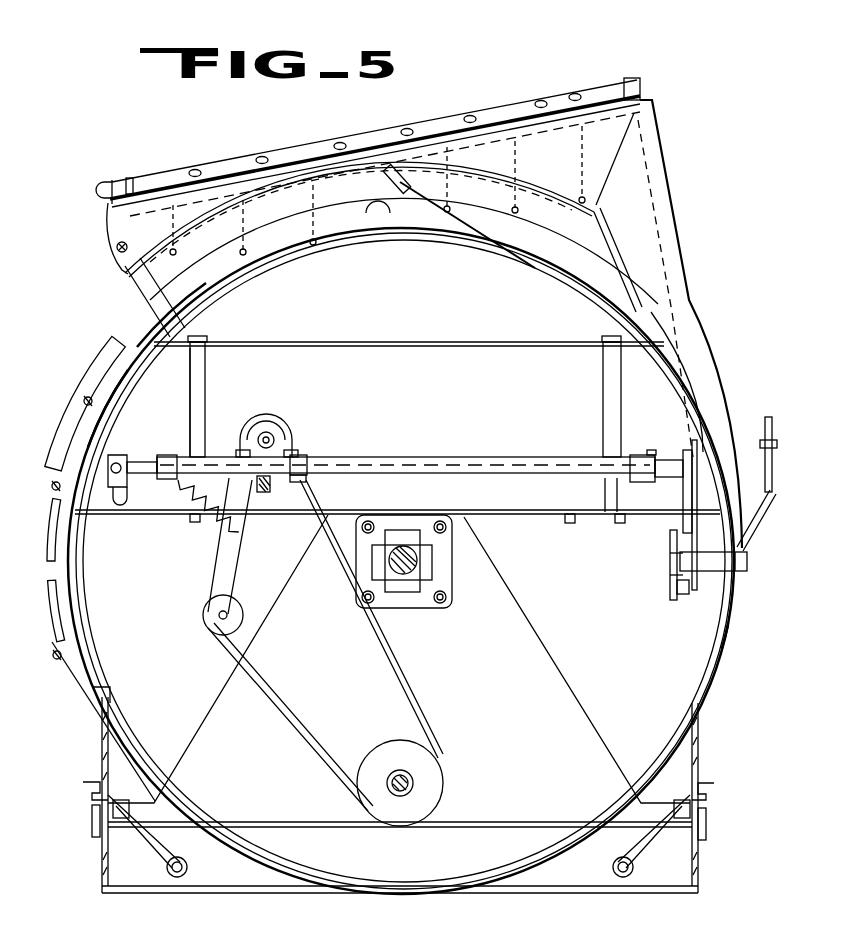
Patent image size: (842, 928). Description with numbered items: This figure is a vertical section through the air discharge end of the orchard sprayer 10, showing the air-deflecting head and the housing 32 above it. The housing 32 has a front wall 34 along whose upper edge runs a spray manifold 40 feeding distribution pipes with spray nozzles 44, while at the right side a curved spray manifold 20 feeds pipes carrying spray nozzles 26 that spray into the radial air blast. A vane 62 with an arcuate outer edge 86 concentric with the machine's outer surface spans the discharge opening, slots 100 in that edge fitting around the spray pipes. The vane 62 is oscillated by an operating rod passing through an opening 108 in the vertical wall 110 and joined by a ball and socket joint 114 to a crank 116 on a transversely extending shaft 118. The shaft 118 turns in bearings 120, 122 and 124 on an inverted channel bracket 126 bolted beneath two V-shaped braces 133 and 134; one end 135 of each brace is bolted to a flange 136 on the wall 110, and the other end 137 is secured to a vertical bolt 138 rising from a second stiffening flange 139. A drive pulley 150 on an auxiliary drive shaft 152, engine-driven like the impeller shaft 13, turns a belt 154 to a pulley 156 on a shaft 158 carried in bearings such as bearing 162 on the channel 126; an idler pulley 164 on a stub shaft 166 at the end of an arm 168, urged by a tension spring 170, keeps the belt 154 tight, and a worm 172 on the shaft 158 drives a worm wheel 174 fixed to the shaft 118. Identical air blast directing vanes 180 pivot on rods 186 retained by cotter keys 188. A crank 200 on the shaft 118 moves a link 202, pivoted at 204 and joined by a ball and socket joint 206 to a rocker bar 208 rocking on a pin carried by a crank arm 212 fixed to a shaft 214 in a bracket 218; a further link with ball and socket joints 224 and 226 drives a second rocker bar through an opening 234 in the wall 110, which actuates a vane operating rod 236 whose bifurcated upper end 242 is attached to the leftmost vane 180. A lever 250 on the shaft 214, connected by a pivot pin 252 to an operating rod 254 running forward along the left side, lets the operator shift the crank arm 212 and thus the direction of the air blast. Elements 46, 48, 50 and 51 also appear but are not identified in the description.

The sprayer 10 is at (706, 70).
The shaft 13 is at (400, 563).
The curved spray manifold 20 is at (160, 320).
The spray nozzles 26 is at (87, 398).
The housing 32 is at (677, 145).
The front wall 34 is at (675, 245).
The spray manifold 40 is at (325, 140).
The spray nozzles 44 is at (195, 170).
The brace 46 is at (506, 250).
The drum rim section 48 is at (735, 640).
The end panel 50 is at (108, 233).
The curved side panel 51 is at (140, 283).
The vane 62 is at (102, 367).
The arcuate outer edge 86 is at (65, 440).
The slots 100 is at (68, 412).
The opening 108 is at (120, 500).
The vertical wall 110 is at (495, 373).
The ball and socket joint 114 is at (117, 462).
The crank 116 is at (128, 456).
The shaft 118 is at (142, 466).
The bearing 120 is at (167, 480).
The bearing 122 is at (305, 480).
The bearing 124 is at (645, 482).
The inverted channel bracket 126 is at (425, 457).
The V-shaped brace 133 is at (205, 370).
The V-shaped brace 134 is at (603, 363).
The brace end 135 is at (205, 341).
The rigid flange 136 is at (320, 341).
The brace end 137 is at (203, 452).
The vertical bolt 138 is at (195, 517).
The second stiffening flange 139 is at (500, 515).
The drive pulley 150 is at (390, 760).
The auxiliary drive shaft 152 is at (398, 776).
The belt 154 is at (210, 592).
The pulley 156 is at (292, 450).
The shaft 158 is at (273, 443).
The bearing 162 is at (268, 441).
The belt tightening idler pulley 164 is at (208, 626).
The stub shaft 166 is at (218, 614).
The arm 168 is at (233, 578).
The tension spring 170 is at (205, 512).
The worm 172 is at (268, 438).
The worm wheel 174 is at (262, 495).
The air blast directing vanes 180 is at (248, 201).
The rod 186 is at (245, 262).
The cotter keys 188 is at (513, 195).
The crank 200 is at (668, 462).
The link 202 is at (690, 530).
The pivot connection 204 is at (690, 437).
The ball and socket joint 206 is at (672, 553).
The rocker bar 208 is at (670, 575).
The crank arm 212 is at (676, 590).
The shaft 214 is at (750, 560).
The bracket 218 is at (720, 575).
The ball and socket joint 224 is at (690, 600).
The ball and socket joint 226 is at (711, 467).
The opening 234 is at (700, 455).
The vane operating rod 236 is at (665, 258).
The upper end 242 is at (675, 125).
The lever 250 is at (770, 420).
The pivot pin 252 is at (772, 450).
The operating rod 254 is at (755, 492).